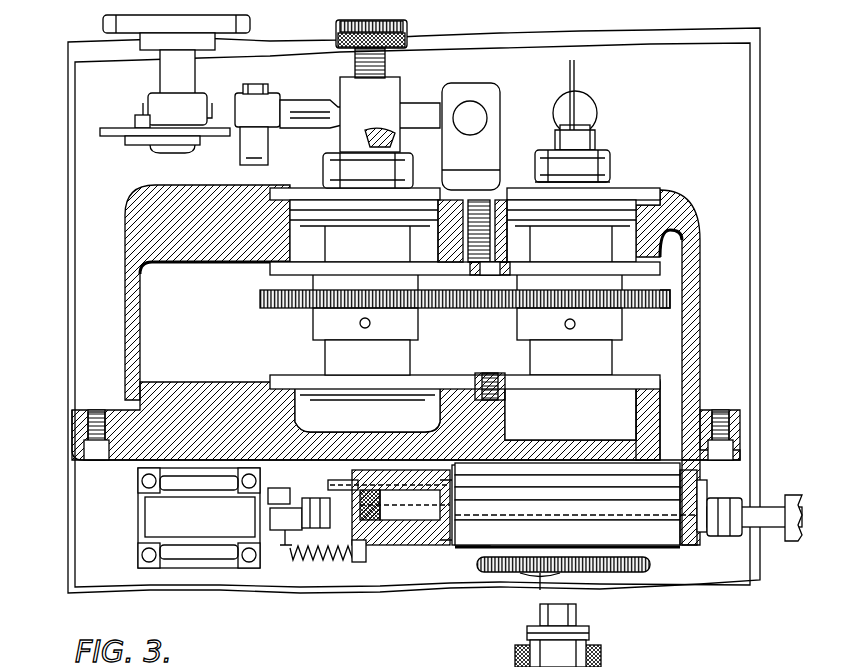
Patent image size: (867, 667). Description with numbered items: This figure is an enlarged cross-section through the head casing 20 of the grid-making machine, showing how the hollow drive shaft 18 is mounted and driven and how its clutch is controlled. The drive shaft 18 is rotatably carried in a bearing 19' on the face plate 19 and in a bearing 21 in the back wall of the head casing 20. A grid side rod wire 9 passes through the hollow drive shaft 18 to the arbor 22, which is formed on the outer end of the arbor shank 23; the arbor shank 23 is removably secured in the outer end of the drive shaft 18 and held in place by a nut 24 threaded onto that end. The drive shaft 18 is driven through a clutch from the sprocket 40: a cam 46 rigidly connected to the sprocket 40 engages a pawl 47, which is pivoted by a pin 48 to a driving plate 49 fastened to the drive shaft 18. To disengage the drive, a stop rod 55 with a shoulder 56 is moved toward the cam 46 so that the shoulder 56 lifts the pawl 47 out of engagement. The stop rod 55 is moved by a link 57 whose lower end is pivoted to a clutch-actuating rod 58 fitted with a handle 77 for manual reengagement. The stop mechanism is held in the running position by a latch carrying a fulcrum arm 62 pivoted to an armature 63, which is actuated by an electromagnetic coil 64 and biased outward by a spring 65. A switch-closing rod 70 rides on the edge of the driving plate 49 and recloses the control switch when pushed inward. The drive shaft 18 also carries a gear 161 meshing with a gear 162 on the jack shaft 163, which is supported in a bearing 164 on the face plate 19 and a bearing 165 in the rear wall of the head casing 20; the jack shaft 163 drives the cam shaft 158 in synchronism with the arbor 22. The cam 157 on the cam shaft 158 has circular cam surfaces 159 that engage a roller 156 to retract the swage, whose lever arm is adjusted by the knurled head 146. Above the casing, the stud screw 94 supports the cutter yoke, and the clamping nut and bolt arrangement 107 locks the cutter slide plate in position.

The side rod wire 9 is at (576, 72).
The drive shaft 18 is at (585, 362).
The face plate 19 is at (366, 405).
The bearing 19' is at (687, 447).
The head casing 20 is at (125, 316).
The bearing 21 is at (620, 242).
The arbor 22 is at (585, 109).
The arbor shank 23 is at (582, 139).
The nut 24 is at (612, 166).
The sprocket 40 is at (490, 567).
The cam 46 is at (612, 512).
The pawl 47 is at (600, 562).
The pin 48 is at (470, 522).
The driving plate 49 is at (672, 517).
The stop rod 55 is at (418, 522).
The shoulder 56 is at (445, 500).
The link 57 is at (300, 492).
The clutch-actuating rod 58 is at (763, 506).
The fulcrum arm 62 is at (275, 517).
The armature 63 is at (260, 532).
The electromagnetic coil 64 is at (188, 548).
The spring 65 is at (312, 562).
The switch-closing rod 70 is at (340, 479).
The handle 77 is at (797, 532).
The stud screw 94 is at (590, 627).
The clamping nut and bolt arrangement 107 is at (602, 656).
The knurled head 146 is at (395, 50).
The roller 156 is at (238, 140).
The cam 157 is at (101, 154).
The cam shaft 158 is at (158, 71).
The cam surfaces 159 is at (100, 135).
The gear 161 is at (655, 290).
The gear 162 is at (260, 291).
The jack shaft 163 is at (383, 135).
The bearing 164 is at (325, 398).
The bearing 165 is at (337, 240).